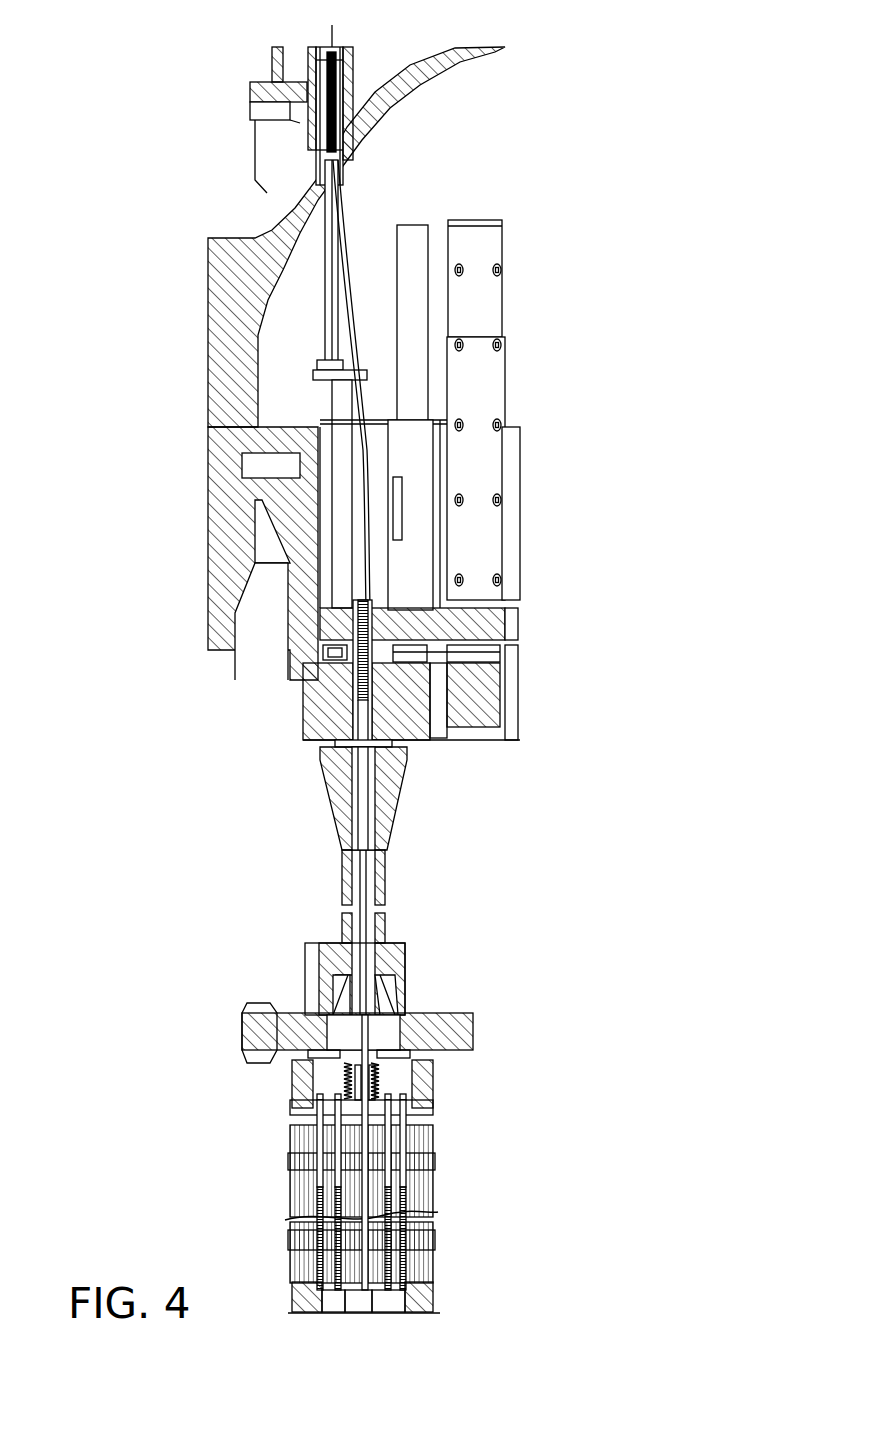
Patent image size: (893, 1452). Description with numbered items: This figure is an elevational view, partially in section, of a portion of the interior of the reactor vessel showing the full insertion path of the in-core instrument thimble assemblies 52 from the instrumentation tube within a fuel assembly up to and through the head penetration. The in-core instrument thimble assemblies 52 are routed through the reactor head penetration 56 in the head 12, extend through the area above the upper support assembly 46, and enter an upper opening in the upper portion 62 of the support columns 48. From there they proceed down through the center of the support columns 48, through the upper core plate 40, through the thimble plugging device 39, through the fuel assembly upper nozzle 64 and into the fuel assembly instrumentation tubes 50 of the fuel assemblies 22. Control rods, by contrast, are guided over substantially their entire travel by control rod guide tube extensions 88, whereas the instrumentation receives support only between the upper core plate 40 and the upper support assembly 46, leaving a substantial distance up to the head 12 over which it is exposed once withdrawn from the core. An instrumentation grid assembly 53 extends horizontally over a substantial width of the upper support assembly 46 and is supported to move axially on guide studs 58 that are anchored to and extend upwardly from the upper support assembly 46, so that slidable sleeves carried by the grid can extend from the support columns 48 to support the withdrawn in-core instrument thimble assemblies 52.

The head 12 is at (385, 68).
The fuel assemblies 22 is at (293, 1200).
The thimble plugging device 39 is at (383, 1073).
The upper core plate 40 is at (240, 1038).
The upper support assembly 46 is at (300, 712).
The support columns 48 is at (397, 802).
The fuel assembly instrumentation tubes 50 is at (372, 1287).
The in-core instrument thimble assemblies 52 is at (330, 35).
The instrumentation grid assembly 53 is at (310, 637).
The reactor head penetration 56 is at (355, 72).
The guide studs 58 is at (417, 253).
The upper portion of the support columns 62 is at (403, 737).
The fuel assembly upper nozzle 64 is at (433, 1095).
The control rod guide tube extensions 88 is at (495, 401).